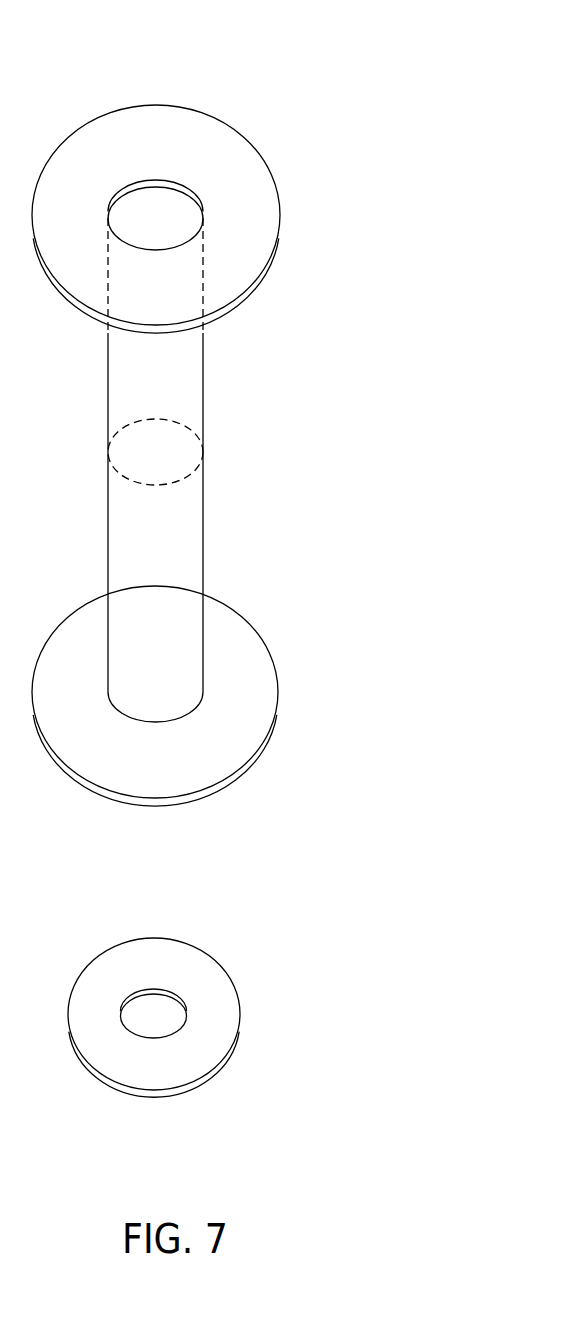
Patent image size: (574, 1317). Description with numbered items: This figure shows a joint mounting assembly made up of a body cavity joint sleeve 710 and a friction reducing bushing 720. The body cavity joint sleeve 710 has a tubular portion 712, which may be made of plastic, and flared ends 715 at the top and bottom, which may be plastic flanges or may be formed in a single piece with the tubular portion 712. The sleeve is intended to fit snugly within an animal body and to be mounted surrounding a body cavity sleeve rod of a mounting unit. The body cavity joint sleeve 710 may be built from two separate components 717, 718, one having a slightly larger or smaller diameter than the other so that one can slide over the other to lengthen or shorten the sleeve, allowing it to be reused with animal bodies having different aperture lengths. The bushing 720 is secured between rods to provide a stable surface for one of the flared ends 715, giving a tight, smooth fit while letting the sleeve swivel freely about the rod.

The body cavity joint sleeve 710 is at (300, 30).
The flared ends 715 is at (280, 180).
The component 717 is at (217, 337).
The tubular portion 712 is at (212, 447).
The component 718 is at (210, 533).
The friction reducing bushing 720 is at (297, 929).